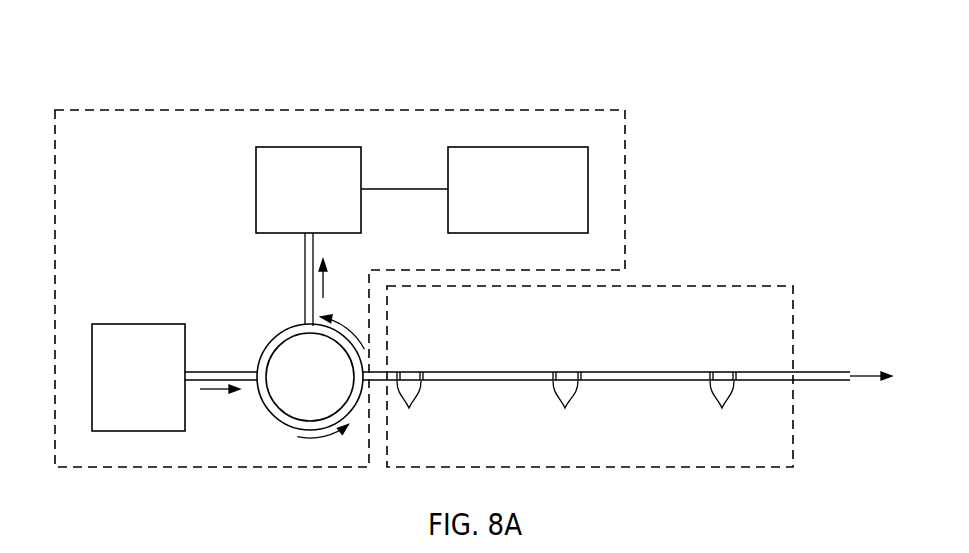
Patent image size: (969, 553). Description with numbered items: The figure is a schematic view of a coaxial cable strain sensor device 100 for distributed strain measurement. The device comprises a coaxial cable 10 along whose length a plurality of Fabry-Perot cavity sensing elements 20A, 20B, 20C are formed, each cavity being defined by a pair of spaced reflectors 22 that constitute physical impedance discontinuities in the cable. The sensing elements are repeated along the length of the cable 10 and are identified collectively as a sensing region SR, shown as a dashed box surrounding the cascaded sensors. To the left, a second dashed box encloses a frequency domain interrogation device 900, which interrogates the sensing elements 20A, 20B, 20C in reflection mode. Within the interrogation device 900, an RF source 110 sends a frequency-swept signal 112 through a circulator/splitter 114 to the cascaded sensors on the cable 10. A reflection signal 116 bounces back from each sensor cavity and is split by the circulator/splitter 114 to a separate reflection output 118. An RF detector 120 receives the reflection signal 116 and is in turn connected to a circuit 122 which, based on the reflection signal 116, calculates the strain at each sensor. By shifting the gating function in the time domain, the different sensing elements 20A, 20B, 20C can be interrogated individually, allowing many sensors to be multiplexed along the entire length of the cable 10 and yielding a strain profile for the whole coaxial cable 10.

The coaxial cable strain sensor device 100 is at (763, 42).
The frequency domain interrogation device 900 is at (151, 98).
The sensing region SR is at (733, 268).
The RF source 110 is at (157, 387).
The frequency-swept signal 112 is at (213, 395).
The circulator/splitter 114 is at (329, 388).
The reflection signal 116 is at (325, 277).
The reflection output 118 is at (305, 277).
The RF detector 120 is at (327, 200).
The circuit 122 is at (536, 200).
The coaxial cable 10 is at (818, 383).
The sensing element 20A is at (405, 372).
The sensing element 20B is at (565, 372).
The sensing element 20C is at (722, 372).
The reflectors 22 is at (567, 411).